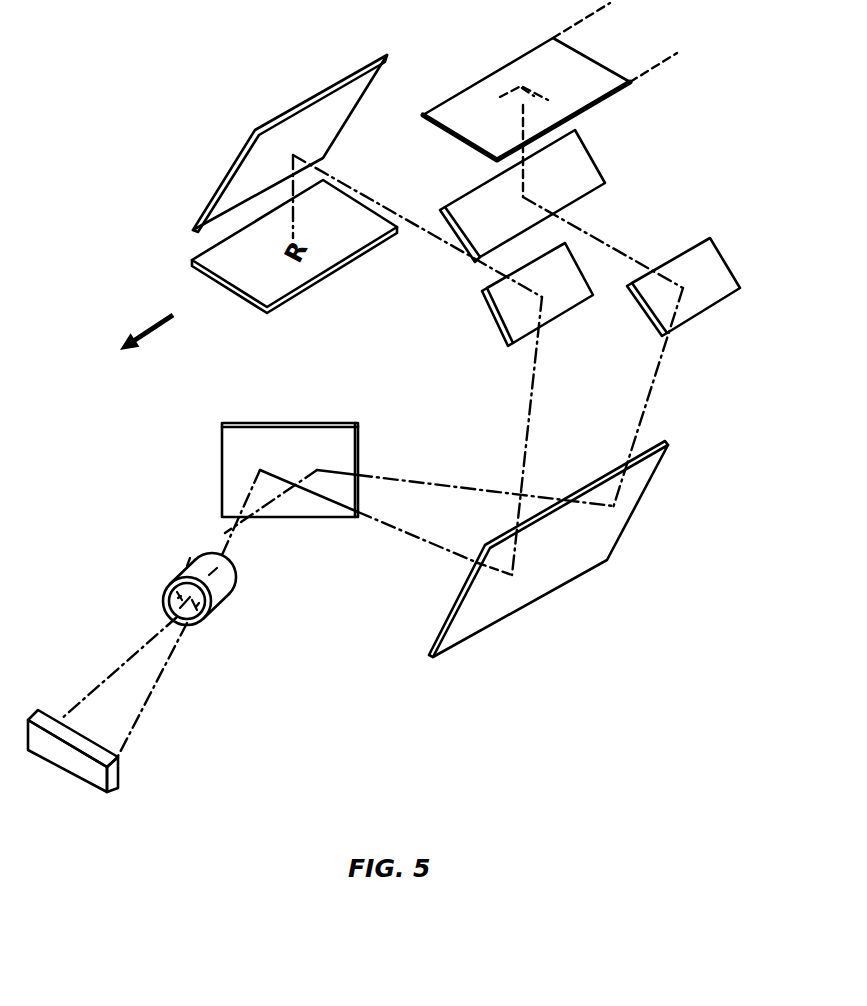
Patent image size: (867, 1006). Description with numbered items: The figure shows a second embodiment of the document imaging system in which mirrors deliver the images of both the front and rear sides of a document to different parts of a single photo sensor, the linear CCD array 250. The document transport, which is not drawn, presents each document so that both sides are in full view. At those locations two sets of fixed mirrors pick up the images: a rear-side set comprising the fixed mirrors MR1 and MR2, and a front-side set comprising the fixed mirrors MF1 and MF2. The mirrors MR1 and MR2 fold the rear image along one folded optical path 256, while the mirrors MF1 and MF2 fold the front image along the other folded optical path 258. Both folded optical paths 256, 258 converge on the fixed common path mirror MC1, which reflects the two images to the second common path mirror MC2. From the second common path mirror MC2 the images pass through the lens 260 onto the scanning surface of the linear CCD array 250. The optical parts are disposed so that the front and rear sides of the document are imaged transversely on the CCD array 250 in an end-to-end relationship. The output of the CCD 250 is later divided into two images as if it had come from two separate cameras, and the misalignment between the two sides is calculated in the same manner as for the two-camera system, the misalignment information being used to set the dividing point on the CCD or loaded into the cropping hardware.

The first rear-side fixed mirror MR1 is at (232, 150).
The second rear-side fixed mirror MR2 is at (510, 305).
The first front-side fixed mirror MF1 is at (590, 180).
The second front-side fixed mirror MF2 is at (703, 255).
The fixed common path mirror MC1 is at (567, 563).
The second common path mirror MC2 is at (333, 438).
The folded optical path 256 is at (525, 452).
The folded optical path 258 is at (660, 365).
The lens 260 is at (178, 568).
The linear CCD array 250 is at (96, 770).